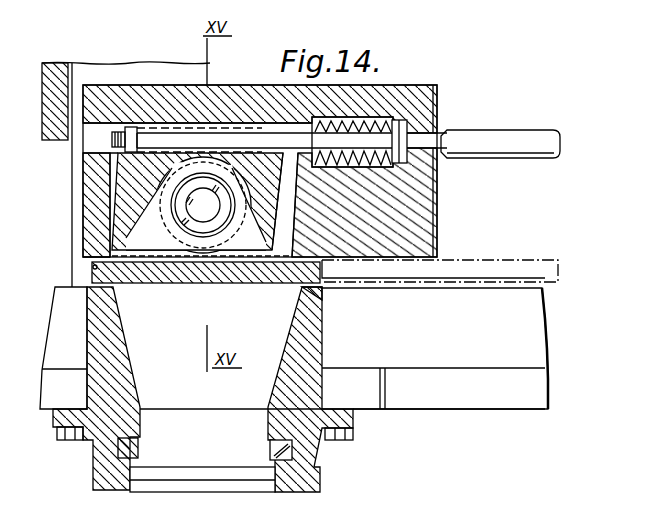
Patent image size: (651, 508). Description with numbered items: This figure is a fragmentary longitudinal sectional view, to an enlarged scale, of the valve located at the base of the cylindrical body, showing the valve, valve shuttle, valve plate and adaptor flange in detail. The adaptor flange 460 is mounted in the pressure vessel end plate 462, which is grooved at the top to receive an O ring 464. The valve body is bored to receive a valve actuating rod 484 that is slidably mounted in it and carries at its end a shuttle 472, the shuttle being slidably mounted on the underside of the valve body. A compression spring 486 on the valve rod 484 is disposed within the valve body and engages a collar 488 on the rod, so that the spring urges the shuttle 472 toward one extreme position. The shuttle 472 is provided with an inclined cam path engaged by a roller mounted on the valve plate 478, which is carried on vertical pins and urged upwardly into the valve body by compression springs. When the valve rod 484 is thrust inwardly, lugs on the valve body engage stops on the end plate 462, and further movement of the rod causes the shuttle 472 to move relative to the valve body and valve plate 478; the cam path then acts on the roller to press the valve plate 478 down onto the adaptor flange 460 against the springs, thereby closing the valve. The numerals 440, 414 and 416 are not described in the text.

The housing 440 is at (222, 85).
The insert block 414 is at (190, 188).
The ball roller 416 is at (207, 220).
The valve plate 478 is at (468, 266).
The O ring 464 is at (304, 290).
The shuttle 472 is at (298, 242).
The pressure vessel end plate 462 is at (527, 340).
The adaptor flange 460 is at (312, 433).
The compression spring 486 is at (437, 184).
The collar 488 is at (408, 129).
The valve actuating rod 484 is at (521, 140).